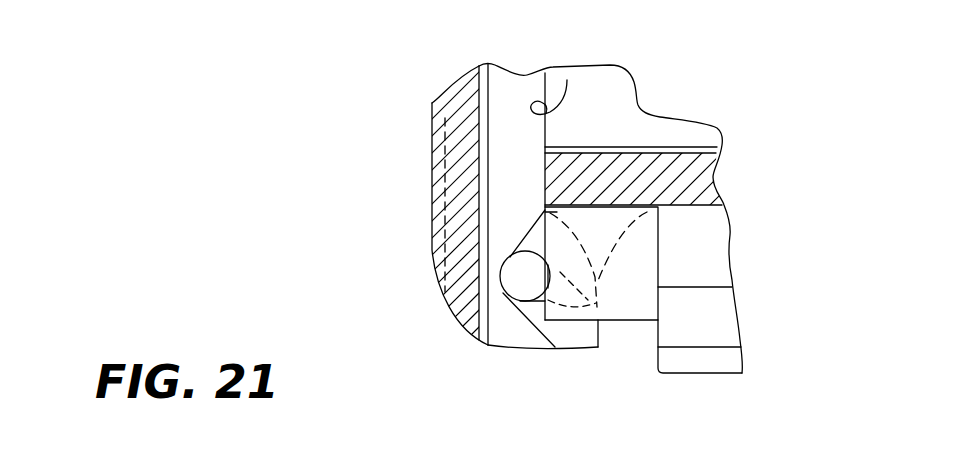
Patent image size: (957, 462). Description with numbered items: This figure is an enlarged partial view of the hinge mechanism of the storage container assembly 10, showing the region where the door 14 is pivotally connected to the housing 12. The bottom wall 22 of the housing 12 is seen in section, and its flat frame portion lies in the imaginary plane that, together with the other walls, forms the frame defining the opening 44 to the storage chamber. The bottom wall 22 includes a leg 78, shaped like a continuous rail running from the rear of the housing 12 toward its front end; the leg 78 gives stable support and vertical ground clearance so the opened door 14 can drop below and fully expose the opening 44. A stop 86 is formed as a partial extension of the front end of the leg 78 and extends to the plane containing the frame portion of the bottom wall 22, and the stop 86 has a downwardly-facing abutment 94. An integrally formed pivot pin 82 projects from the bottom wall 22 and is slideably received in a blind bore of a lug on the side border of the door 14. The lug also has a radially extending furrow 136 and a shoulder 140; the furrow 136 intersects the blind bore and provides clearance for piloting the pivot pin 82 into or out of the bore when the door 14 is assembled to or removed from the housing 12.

The storage container assembly 10 is at (398, 72).
The housing 12 is at (642, 92).
The door 14 is at (432, 180).
The bottom wall 22 is at (703, 182).
The opening 44 is at (567, 80).
The leg 78 is at (717, 363).
The pivot pin 82 is at (517, 278).
The stop 86 is at (640, 278).
The downwardly-facing abutment 94 is at (645, 323).
The furrow 136 is at (562, 307).
The shoulder 140 is at (598, 330).